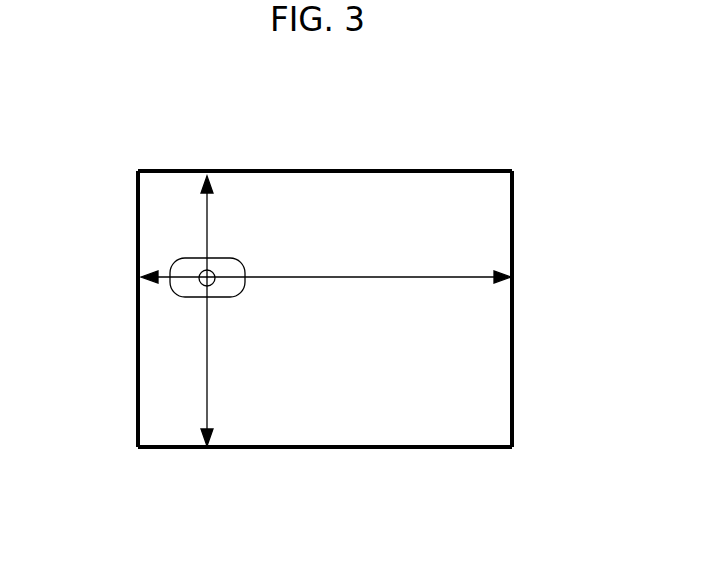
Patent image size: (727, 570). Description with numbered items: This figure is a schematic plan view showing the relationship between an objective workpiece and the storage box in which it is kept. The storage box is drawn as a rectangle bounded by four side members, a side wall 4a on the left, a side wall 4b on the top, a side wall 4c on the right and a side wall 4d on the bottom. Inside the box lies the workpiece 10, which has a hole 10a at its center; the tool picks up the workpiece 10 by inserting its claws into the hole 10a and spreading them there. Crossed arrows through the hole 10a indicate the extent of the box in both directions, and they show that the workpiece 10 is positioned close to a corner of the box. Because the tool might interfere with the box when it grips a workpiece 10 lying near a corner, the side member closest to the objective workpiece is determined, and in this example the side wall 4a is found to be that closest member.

The side wall 4a is at (138, 397).
The top side of substrate 4b is at (365, 170).
The right side of substrate 4c is at (513, 368).
The bottom side of substrate 4d is at (388, 448).
The workpiece 10 is at (190, 259).
The hole 10a is at (205, 286).